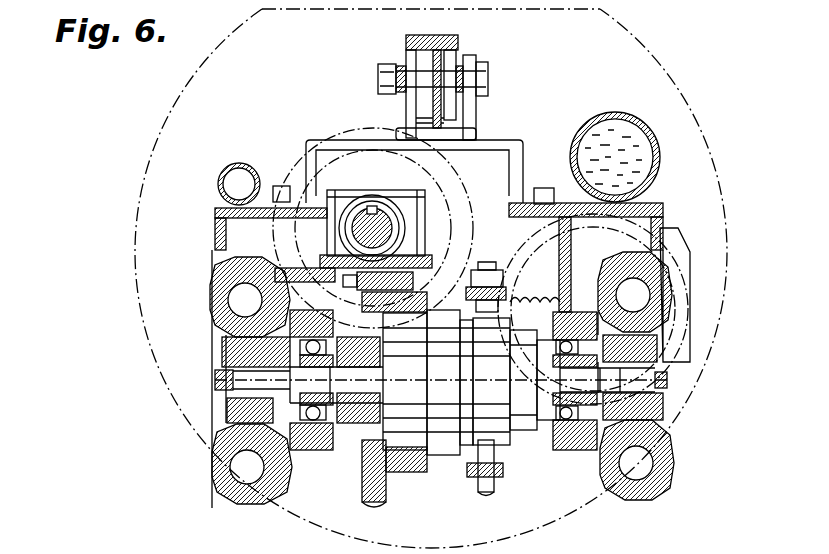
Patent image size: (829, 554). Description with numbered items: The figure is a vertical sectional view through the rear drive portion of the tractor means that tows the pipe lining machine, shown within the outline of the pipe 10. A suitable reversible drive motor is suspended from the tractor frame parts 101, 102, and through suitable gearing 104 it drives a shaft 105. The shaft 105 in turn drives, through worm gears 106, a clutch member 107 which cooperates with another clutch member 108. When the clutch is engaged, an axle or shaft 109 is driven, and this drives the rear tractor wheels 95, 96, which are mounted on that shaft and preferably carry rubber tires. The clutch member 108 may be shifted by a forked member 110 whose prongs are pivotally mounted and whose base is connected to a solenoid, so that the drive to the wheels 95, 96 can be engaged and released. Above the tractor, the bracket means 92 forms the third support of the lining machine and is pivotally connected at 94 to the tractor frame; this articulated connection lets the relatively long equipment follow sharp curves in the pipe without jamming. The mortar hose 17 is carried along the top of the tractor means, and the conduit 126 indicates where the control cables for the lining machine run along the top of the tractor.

The frame 10 is at (729, 166).
The mortar hose 17 is at (610, 116).
The bracket means 92 is at (462, 41).
The pivotal connection 94 is at (391, 80).
The rear tractor wheel 95 is at (668, 416).
The rear tractor wheel 96 is at (212, 300).
The tractor frame part 101 is at (214, 226).
The tractor frame part 102 is at (546, 308).
The gearing 104 is at (516, 283).
The shaft 105 is at (383, 194).
The worm gears 106 is at (396, 272).
The clutch member 107 is at (404, 473).
The clutch member 108 is at (460, 462).
The axle or shaft 109 is at (541, 450).
The forked member 110 is at (513, 471).
The conduit 126 is at (249, 153).